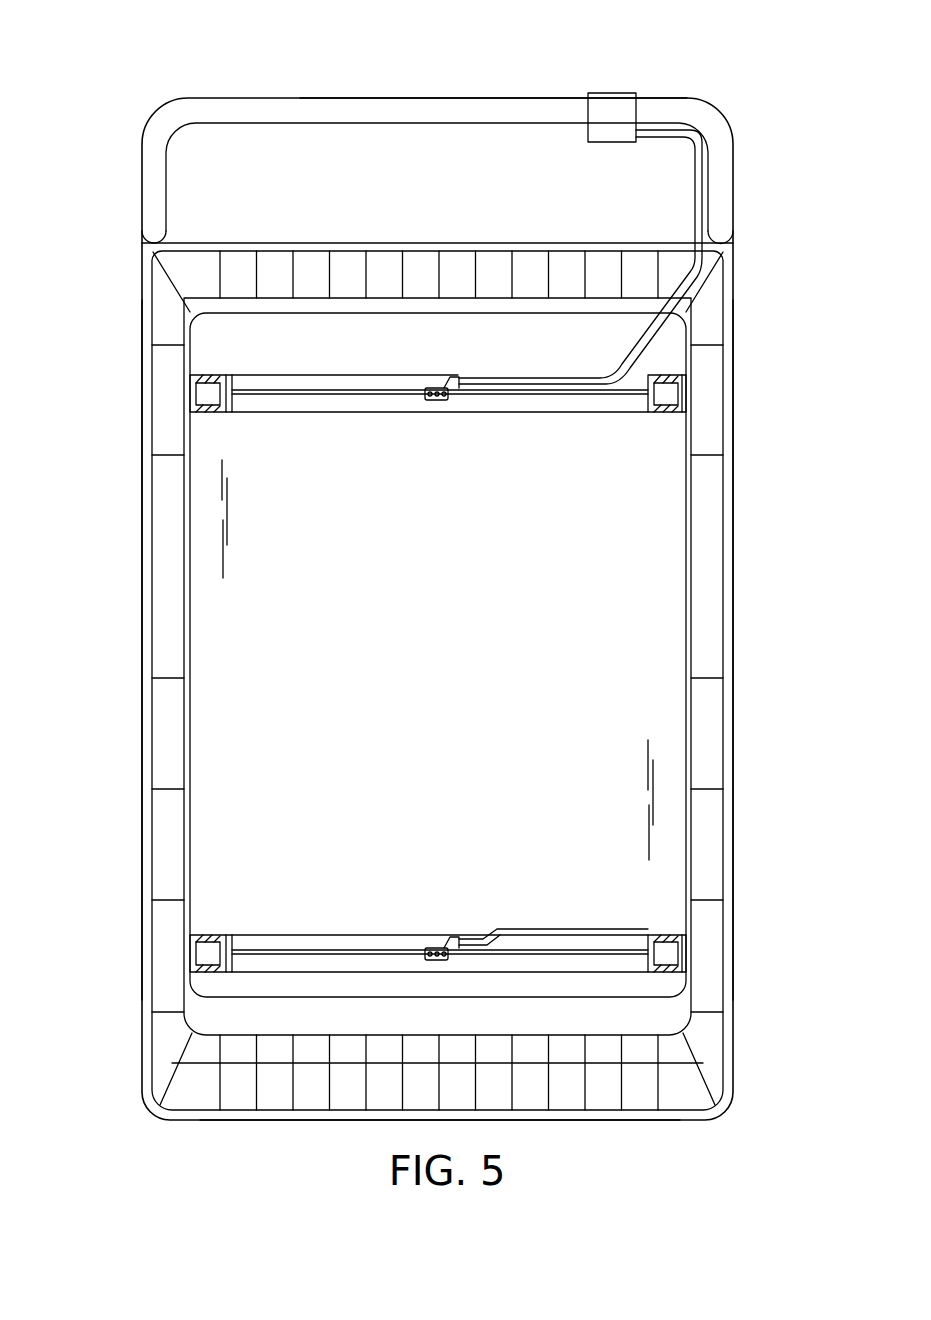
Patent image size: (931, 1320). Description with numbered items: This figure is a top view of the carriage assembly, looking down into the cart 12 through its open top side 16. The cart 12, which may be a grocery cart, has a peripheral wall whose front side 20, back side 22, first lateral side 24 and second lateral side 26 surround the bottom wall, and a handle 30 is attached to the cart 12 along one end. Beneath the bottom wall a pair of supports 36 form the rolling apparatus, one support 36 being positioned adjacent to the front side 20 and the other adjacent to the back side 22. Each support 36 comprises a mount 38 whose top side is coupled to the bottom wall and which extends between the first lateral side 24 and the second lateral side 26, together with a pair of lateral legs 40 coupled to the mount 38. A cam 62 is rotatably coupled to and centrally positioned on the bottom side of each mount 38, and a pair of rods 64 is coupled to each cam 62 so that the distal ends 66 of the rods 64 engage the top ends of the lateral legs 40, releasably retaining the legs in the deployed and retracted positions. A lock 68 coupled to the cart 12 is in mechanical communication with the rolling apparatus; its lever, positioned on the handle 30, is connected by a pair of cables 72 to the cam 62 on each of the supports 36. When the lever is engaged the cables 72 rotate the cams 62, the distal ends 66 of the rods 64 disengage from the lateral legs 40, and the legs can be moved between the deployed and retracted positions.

The cart 12 is at (747, 672).
The open top side 16 is at (722, 817).
The front side 20 is at (318, 1120).
The back side 22 is at (324, 242).
The first lateral side 24 is at (728, 415).
The second lateral side 26 is at (143, 634).
The handle 30 is at (468, 108).
The supports 36 is at (232, 376).
The mount 38 is at (440, 375).
The lateral legs 40 is at (196, 396).
The cam 62 is at (428, 393).
The rods 64 is at (345, 945).
The distal ends 66 is at (222, 955).
The lock 68 is at (673, 179).
The cables 72 is at (690, 290).